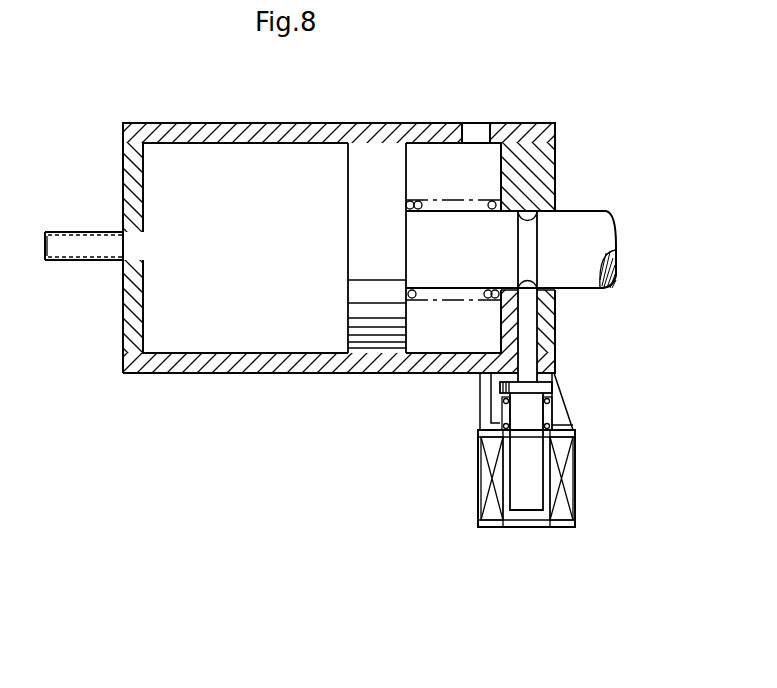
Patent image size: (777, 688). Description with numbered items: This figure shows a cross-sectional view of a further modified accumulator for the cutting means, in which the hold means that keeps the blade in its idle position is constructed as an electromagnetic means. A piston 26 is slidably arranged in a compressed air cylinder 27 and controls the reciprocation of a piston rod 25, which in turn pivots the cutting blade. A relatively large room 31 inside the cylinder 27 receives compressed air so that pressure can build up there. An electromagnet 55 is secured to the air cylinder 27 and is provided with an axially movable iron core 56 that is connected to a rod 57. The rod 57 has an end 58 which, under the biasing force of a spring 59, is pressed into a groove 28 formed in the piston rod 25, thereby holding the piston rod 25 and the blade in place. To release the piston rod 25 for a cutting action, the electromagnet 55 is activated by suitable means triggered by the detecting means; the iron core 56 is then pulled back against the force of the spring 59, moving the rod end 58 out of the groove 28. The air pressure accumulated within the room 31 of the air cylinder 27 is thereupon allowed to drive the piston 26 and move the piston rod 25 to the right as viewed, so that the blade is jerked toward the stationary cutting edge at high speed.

The piston rod 25 is at (582, 226).
The piston 26 is at (404, 156).
The compressed air cylinder 27 is at (520, 143).
The groove 28 is at (527, 264).
The room 31 is at (143, 239).
The electromagnet 55 is at (567, 478).
The iron core 56 is at (532, 500).
The rod 57 is at (527, 362).
The end 58 is at (540, 294).
The spring 59 is at (553, 423).